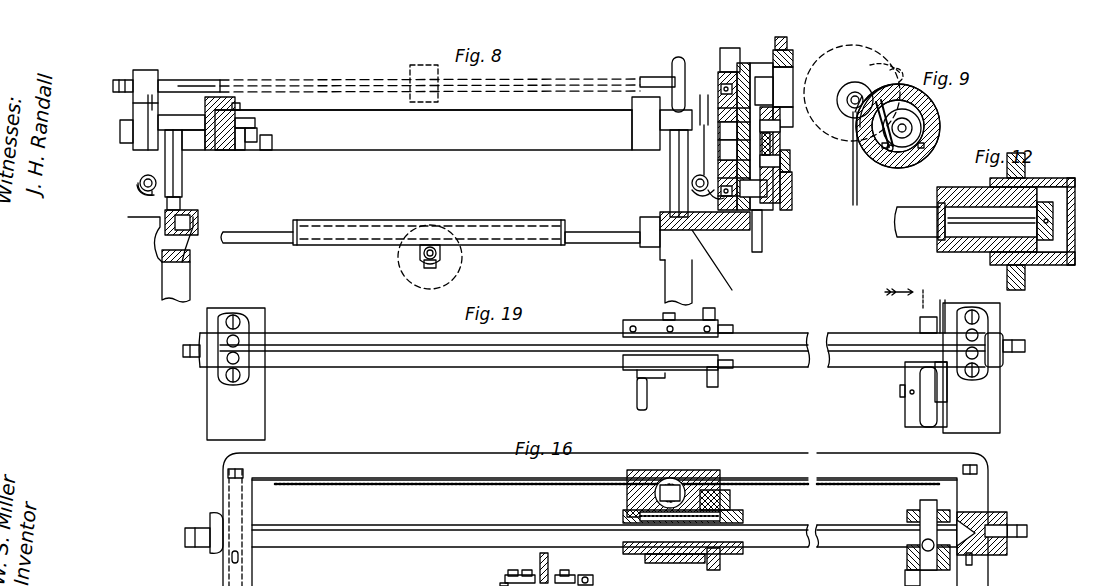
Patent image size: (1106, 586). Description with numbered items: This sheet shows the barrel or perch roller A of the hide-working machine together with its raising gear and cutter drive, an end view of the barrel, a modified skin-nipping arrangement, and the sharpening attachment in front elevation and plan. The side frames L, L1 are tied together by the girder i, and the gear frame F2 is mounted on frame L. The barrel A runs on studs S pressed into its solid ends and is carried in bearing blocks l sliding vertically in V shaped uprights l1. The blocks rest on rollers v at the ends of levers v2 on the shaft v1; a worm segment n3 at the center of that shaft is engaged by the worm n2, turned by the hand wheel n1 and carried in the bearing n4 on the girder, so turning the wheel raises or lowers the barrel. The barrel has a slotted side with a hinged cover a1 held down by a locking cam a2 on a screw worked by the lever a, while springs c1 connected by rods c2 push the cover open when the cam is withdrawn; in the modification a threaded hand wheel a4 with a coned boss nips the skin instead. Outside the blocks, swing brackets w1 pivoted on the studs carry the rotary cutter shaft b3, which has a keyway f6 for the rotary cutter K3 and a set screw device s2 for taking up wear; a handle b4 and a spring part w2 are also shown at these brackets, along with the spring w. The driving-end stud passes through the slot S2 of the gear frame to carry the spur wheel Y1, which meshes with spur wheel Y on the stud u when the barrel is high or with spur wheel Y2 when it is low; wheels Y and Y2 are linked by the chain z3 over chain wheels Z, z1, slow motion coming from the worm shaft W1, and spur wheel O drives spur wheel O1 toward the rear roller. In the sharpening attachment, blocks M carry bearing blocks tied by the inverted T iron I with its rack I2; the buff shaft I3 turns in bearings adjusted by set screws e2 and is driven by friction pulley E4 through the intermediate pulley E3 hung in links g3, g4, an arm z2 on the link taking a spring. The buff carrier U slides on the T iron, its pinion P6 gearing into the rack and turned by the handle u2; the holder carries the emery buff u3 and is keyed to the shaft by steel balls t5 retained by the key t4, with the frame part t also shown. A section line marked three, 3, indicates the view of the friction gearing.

In FIG. 8, the barrel or perch roller A is at (423, 130).
In FIG. 9, the barrel or perch roller A is at (925, 105).
In FIG. 12, the barrel or perch roller A is at (980, 195).
In FIG. 8, the lever a is at (442, 123).
In FIG. 9, the lever a is at (851, 150).
In FIG. 8, the cover a1 is at (423, 102).
In FIG. 8, the locking cam a2 is at (622, 108).
In FIG. 9, the locking cam a2 is at (846, 102).
In FIG. 12, the hand wheel a4 is at (1026, 168).
In FIG. 8, the rotary cutter shaft b3 is at (416, 67).
In FIG. 8, the handle b4 is at (672, 62).
In FIG. 8, the spring c1 is at (257, 142).
In FIG. 8, the small rod c2 is at (257, 123).
In FIG. 9, the small rod c2 is at (880, 150).
In FIG. 8, the groove or keyway f6 is at (196, 84).
In FIG. 8, the rotary cutter K3 is at (408, 66).
In FIG. 8, the stud or short shaft s is at (120, 131).
In FIG. 9, the stud or short shaft s is at (902, 128).
In FIG. 12, the stud or short shaft s is at (965, 221).
In FIG. 8, the set screw device s2 is at (113, 86).
In FIG. 8, the roller v is at (158, 250).
In FIG. 8, the shaft v1 is at (133, 103).
In FIG. 8, the arm or lever v2 is at (457, 227).
In FIG. 8, the bearing block l is at (182, 163).
In FIG. 8, the V shaped upright l1 is at (182, 200).
In FIG. 8, the spring w is at (137, 193).
In FIG. 8, the swing bracket w1 is at (702, 135).
In FIG. 8, the coil w2 is at (692, 183).
In FIG. 8, the side frame L is at (696, 267).
In FIG. 8, the side frame L1 is at (176, 276).
In FIG. 8, the girder i is at (429, 224).
In FIG. 8, the hand wheel n1 is at (440, 276).
In FIG. 8, the worm n2 is at (428, 280).
In FIG. 8, the worm segment n3 is at (418, 255).
In FIG. 8, the bearing n4 is at (443, 255).
In FIG. 8, the gear frame F2 is at (730, 51).
In FIG. 8, the spur wheel Y is at (734, 132).
In FIG. 8, the spur wheel Y1 is at (781, 155).
In FIG. 8, the spur wheel Y2 is at (794, 191).
In FIG. 8, the stud or short shaft S is at (728, 131).
In FIG. 8, the slot S2 is at (728, 150).
In FIG. 8, the stud u is at (755, 136).
In FIG. 19, the lever or handle u2 is at (647, 398).
In FIG. 19, the emery wheel or buff u3 is at (712, 353).
In FIG. 16, the emery wheel or buff u3 is at (720, 566).
In FIG. 19, the buff carrier U is at (683, 374).
In FIG. 16, the buff carrier U is at (726, 496).
In FIG. 8, the spur wheel O is at (787, 121).
In FIG. 8, the spur wheel O1 is at (787, 48).
In FIG. 8, the chain wheel Z is at (793, 60).
In FIG. 8, the chain wheel z1 is at (790, 162).
In FIG. 19, the arm z2 is at (934, 310).
In FIG. 8, the chain z3 is at (777, 146).
In FIG. 8, the worm shaft W1 is at (767, 231).
In FIG. 19, the block M is at (971, 368).
In FIG. 19, the inverted T iron I is at (482, 368).
In FIG. 16, the inverted T iron I is at (440, 478).
In FIG. 16, the rack I2 is at (443, 486).
In FIG. 16, the buff shaft I3 is at (604, 536).
In FIG. 19, the set screw adjustment e2 is at (188, 344).
In FIG. 16, the set screw adjustment e2 is at (198, 527).
In FIG. 19, the intermediate friction pulley E3 is at (925, 420).
In FIG. 19, the friction pulley E4 is at (920, 320).
In FIG. 16, the friction pulley E4 is at (932, 510).
In FIG. 19, the link g3 is at (905, 404).
In FIG. 19, the link g4 is at (948, 392).
In FIG. 16, the link g4 is at (905, 576).
In FIG. 16, the frame t is at (238, 557).
In FIG. 16, the key t4 is at (623, 516).
In FIG. 16, the hard steel balls t5 is at (672, 530).
In FIG. 16, the pinion P6 is at (680, 485).
In FIG. 19, the section line 3 is at (907, 361).